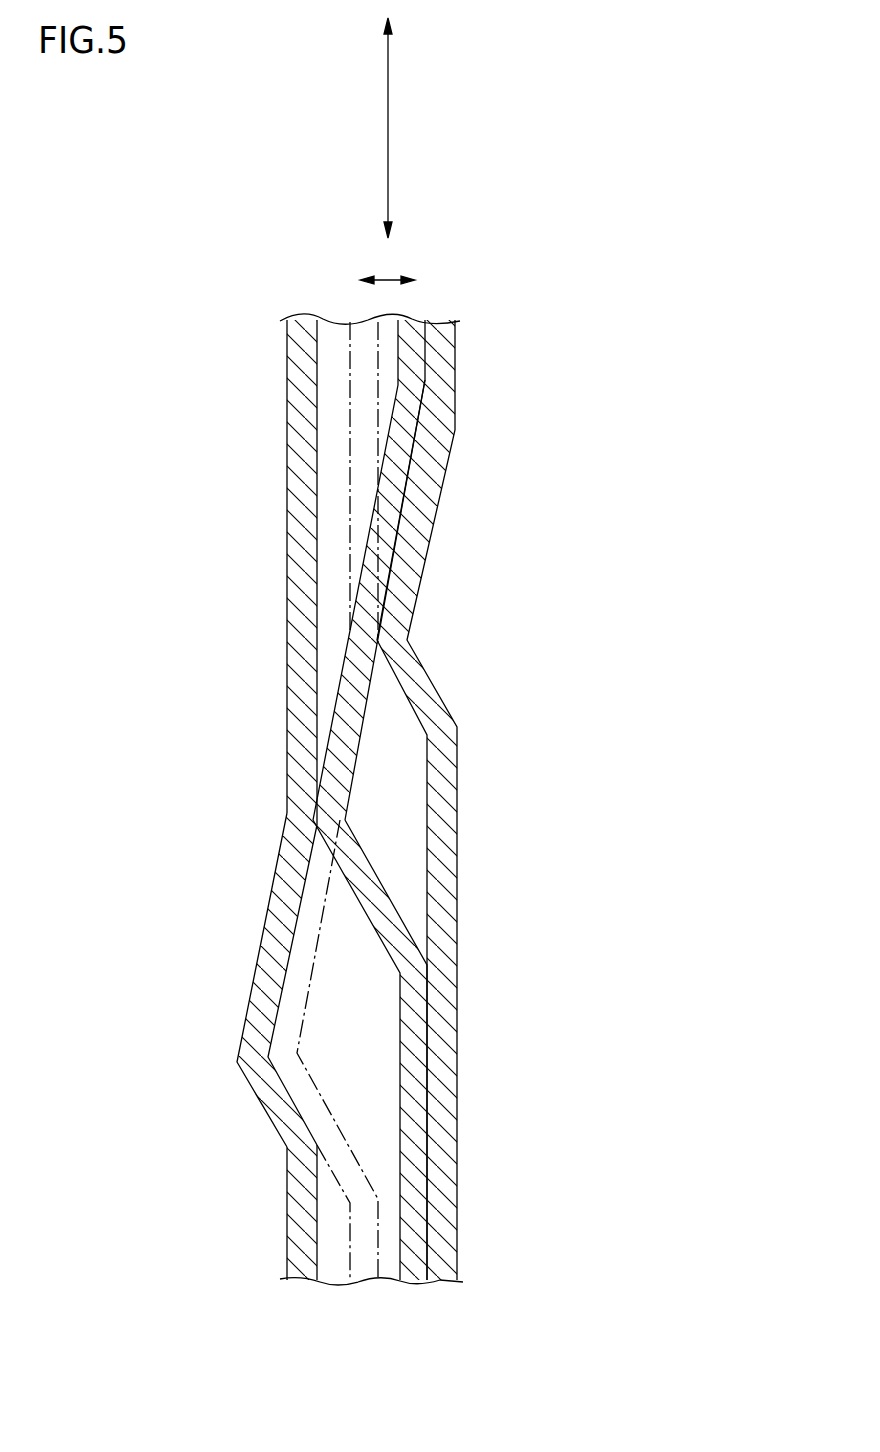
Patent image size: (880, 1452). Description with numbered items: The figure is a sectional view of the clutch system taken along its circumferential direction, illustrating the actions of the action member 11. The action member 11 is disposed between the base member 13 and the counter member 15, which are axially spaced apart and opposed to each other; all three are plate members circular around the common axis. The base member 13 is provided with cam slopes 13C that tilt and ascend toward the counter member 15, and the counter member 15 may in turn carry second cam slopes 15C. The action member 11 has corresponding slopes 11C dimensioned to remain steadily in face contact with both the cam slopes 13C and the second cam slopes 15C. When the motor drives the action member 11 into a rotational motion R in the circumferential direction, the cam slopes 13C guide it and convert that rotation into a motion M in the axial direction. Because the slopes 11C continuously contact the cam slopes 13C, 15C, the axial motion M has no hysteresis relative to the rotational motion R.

The action member 11 is at (412, 1270).
The base member 13 is at (440, 1265).
The counter member 15 is at (310, 1279).
The slopes 11C is at (353, 775).
The cam slopes 13C is at (429, 543).
The second cam slopes 15C is at (262, 937).
The rotational motion R is at (391, 122).
The motion in the axial direction M is at (388, 278).